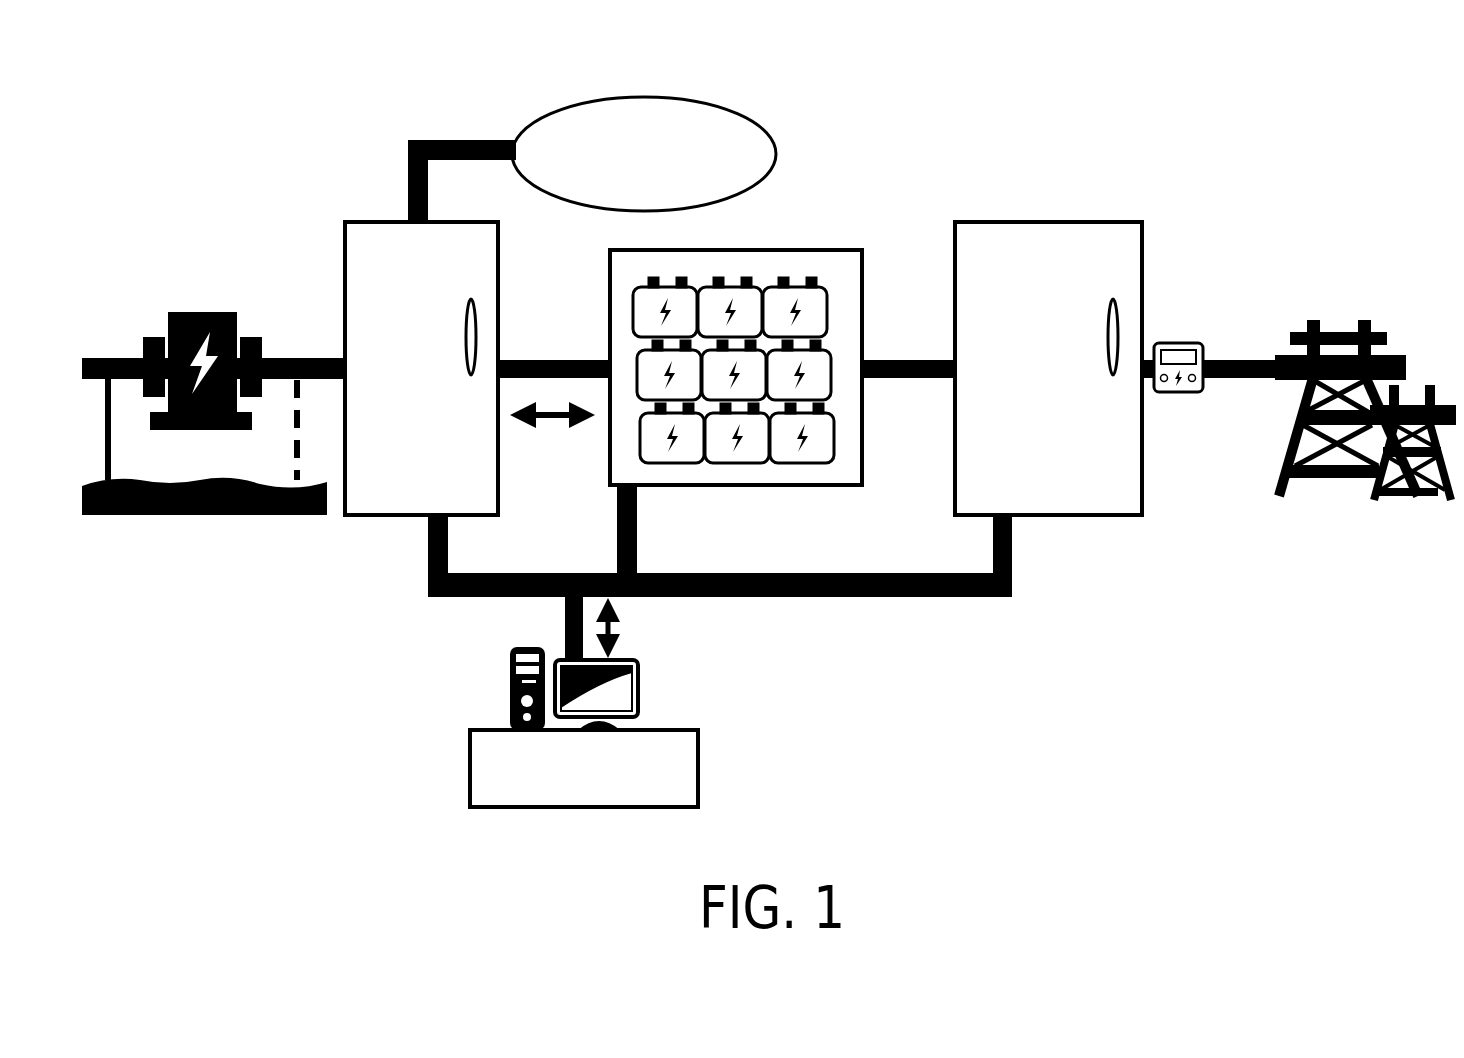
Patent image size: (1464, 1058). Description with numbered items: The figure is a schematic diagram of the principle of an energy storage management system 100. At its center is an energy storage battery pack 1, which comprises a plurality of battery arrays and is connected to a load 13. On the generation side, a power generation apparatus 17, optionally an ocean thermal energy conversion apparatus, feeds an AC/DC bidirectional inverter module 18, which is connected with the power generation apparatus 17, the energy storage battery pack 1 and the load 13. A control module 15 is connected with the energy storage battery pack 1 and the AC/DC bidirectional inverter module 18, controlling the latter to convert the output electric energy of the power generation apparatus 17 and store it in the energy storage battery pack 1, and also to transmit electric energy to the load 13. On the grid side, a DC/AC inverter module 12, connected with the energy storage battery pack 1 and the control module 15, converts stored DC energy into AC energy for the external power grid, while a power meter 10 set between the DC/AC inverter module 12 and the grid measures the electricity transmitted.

The energy storage management system 100 is at (508, 60).
The energy storage battery pack 1 is at (820, 250).
The power meter 10 is at (1187, 352).
The DC/AC inverter module 12 is at (995, 227).
The load 13 is at (667, 98).
The control module 15 is at (690, 758).
The power generation apparatus 17 is at (210, 303).
The AC/DC bidirectional inverter module 18 is at (498, 281).